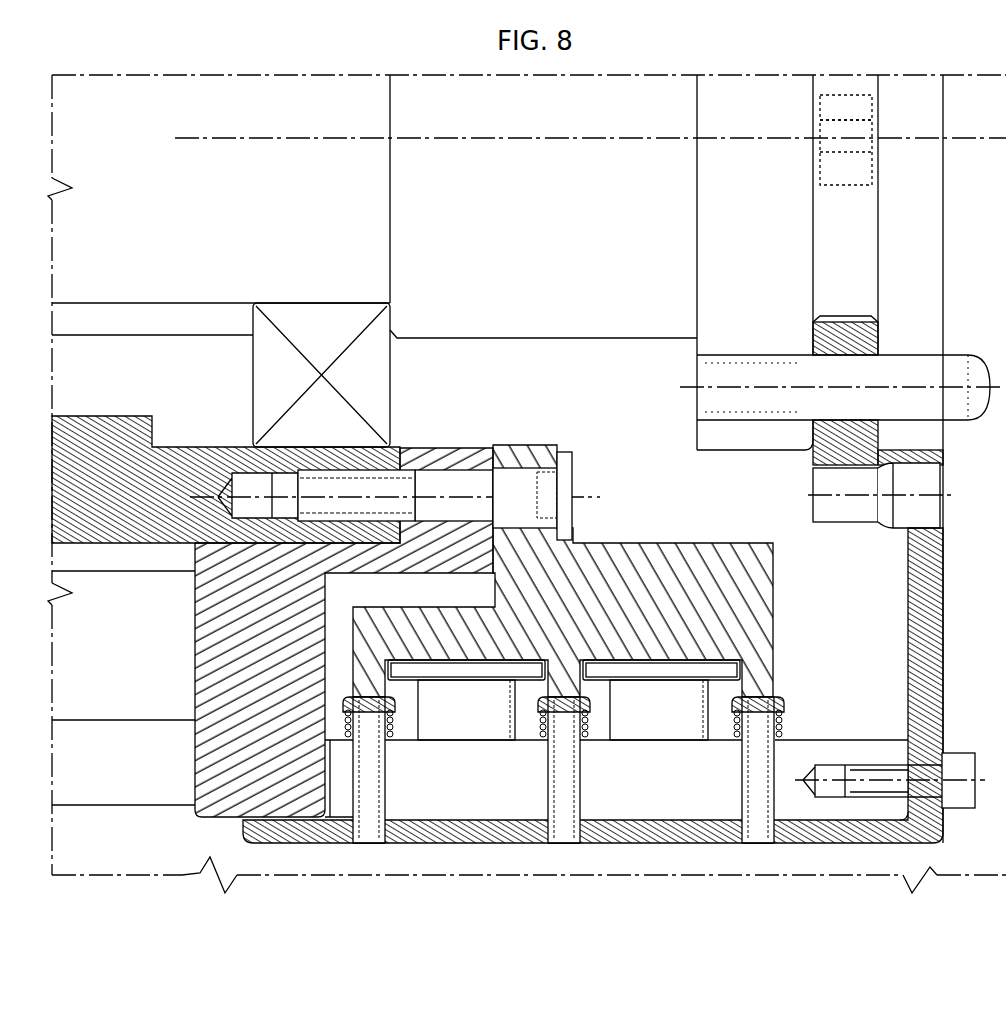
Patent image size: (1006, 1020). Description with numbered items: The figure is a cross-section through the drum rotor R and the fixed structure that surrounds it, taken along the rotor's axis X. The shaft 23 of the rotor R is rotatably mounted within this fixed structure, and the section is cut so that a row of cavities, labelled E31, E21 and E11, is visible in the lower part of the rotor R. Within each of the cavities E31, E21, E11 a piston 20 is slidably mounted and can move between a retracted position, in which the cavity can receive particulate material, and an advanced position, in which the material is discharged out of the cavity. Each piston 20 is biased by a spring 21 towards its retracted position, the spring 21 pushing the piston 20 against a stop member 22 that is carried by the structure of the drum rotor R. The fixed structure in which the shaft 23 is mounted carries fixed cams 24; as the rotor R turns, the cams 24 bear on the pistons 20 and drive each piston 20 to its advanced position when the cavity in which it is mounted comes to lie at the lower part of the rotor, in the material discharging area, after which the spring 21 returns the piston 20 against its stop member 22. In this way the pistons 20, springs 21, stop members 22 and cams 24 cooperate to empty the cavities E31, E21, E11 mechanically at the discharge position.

The piston 20 is at (403, 804).
The spring 21 is at (400, 732).
The stop member 22 is at (462, 670).
The shaft 23 is at (630, 325).
The fixed cam 24 is at (368, 688).
The axis X is at (480, 142).
The drum rotor R is at (968, 600).
The cavity E31 is at (368, 845).
The cavity E21 is at (563, 845).
The cavity E11 is at (757, 845).